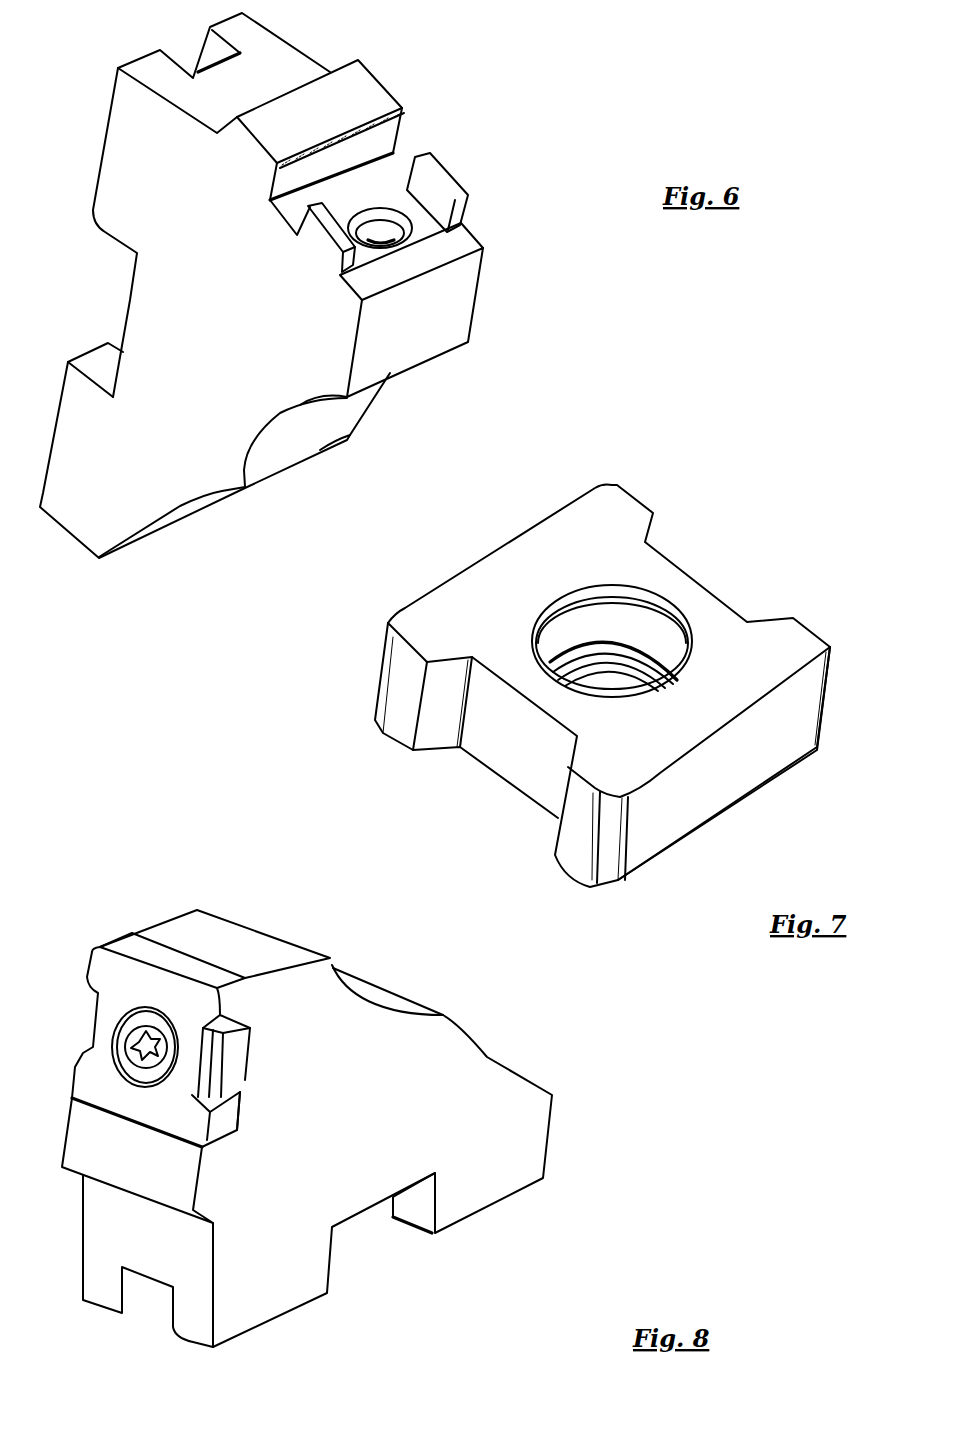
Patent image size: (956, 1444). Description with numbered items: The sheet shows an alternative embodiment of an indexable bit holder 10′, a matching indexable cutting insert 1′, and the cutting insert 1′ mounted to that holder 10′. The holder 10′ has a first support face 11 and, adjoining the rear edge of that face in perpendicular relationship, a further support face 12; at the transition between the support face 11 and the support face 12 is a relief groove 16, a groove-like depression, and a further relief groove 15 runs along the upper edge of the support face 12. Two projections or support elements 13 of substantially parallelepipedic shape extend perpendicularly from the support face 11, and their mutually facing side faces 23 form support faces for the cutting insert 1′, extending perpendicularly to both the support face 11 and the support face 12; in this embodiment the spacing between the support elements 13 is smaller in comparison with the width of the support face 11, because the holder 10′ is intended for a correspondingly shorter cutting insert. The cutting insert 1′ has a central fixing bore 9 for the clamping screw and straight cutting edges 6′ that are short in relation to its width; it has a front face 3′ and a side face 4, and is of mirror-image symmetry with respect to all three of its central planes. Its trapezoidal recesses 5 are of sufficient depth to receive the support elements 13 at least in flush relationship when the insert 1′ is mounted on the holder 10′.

In FIG. 7, the cutting insert 1′ is at (745, 555).
In FIG. 8, the cutting insert 1′ is at (150, 950).
In FIG. 7, the side face of insert 3′ is at (779, 728).
In FIG. 7, the side face 4 is at (578, 832).
In FIG. 7, the recesses 5 is at (538, 770).
In FIG. 8, the recesses 5 is at (202, 1047).
In FIG. 7, the cutting edges 6′ is at (774, 682).
In FIG. 6, the fixing bore 9 is at (380, 243).
In FIG. 7, the fixing bore 9 is at (605, 680).
In FIG. 6, the holder body 10′ is at (175, 540).
In FIG. 8, the holder body 10′ is at (348, 1152).
In FIG. 6, the first support face 11 is at (437, 238).
In FIG. 6, the further support face 12 is at (398, 155).
In FIG. 6, the support elements 13 is at (450, 180).
In FIG. 8, the support elements 13 is at (217, 1062).
In FIG. 6, the relief groove 15 is at (390, 134).
In FIG. 6, the relief groove 16 is at (360, 59).
In FIG. 6, the side faces 23 is at (412, 187).